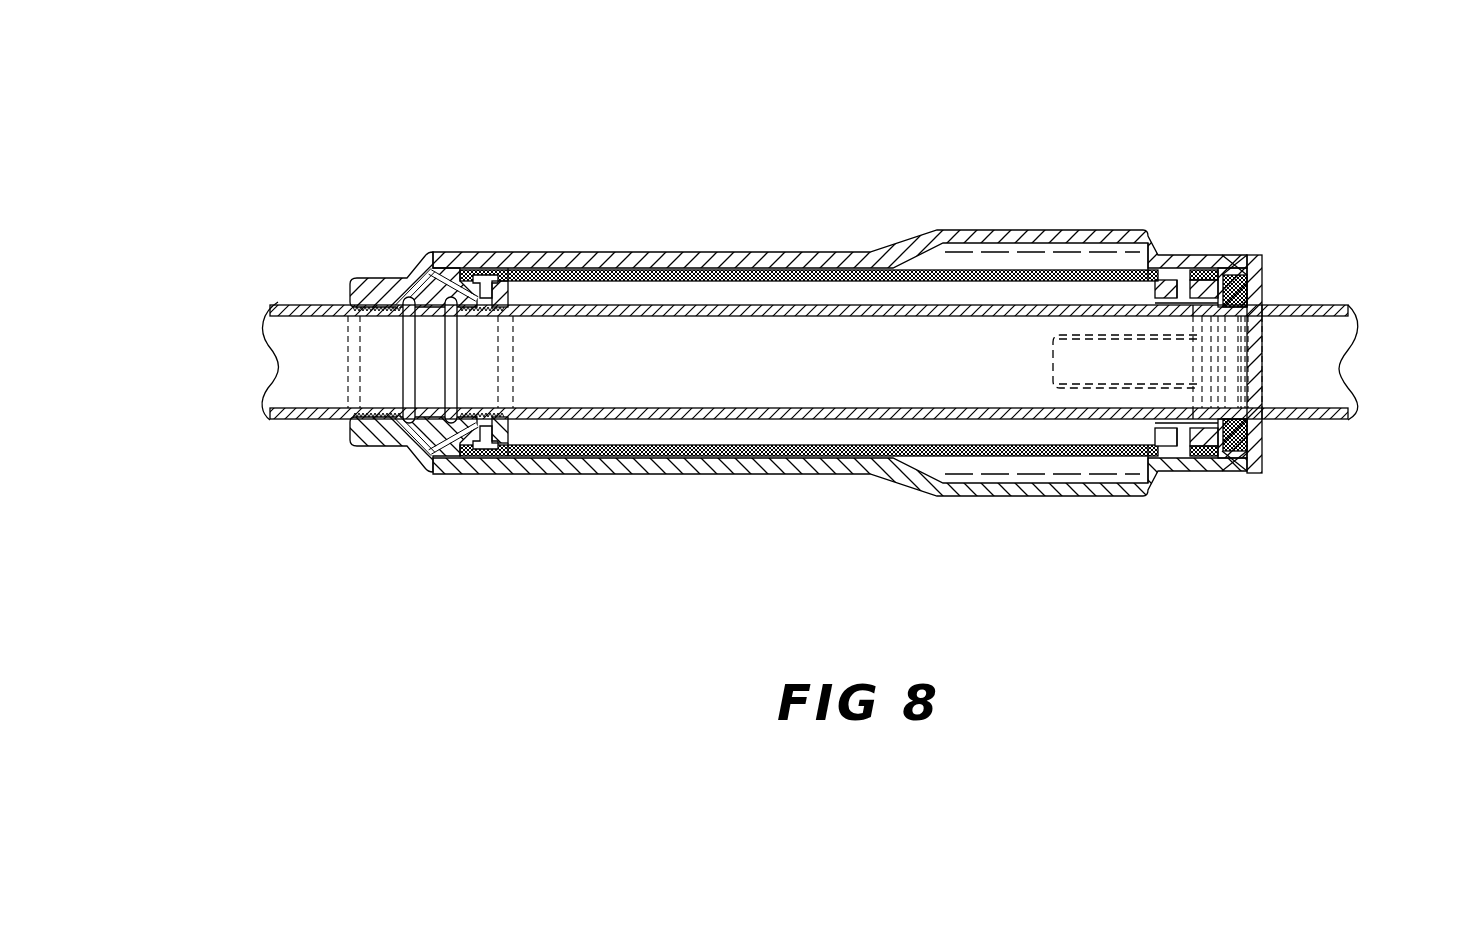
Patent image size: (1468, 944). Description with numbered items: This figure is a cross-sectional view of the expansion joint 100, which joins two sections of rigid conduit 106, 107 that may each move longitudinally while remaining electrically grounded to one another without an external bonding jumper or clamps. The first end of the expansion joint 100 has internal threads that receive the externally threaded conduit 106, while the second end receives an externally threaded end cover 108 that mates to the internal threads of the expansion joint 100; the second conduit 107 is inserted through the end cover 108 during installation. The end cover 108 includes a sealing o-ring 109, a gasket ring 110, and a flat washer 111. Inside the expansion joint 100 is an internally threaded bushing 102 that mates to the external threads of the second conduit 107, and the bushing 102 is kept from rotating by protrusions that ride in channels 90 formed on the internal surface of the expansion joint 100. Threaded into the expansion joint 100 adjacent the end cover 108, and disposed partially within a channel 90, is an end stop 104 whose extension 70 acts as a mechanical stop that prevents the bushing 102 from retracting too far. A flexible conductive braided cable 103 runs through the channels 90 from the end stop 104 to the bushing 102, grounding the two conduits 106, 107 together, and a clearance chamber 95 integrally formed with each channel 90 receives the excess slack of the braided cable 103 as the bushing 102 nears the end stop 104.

The expansion joint 100 is at (805, 294).
The channel 90 is at (663, 290).
The clearance chamber 95 is at (1082, 263).
The extension 70 is at (1053, 362).
The bushing 102 is at (438, 475).
The flexible conductive braided cable 103 is at (923, 277).
The end stop 104 is at (1200, 437).
The conduit 106 is at (277, 403).
The second conduit 107 is at (1368, 440).
The end cover 108 is at (1253, 480).
The sealing o-ring 109 is at (1228, 265).
The gasket ring 110 is at (1263, 262).
The flat washer 111 is at (1220, 285).